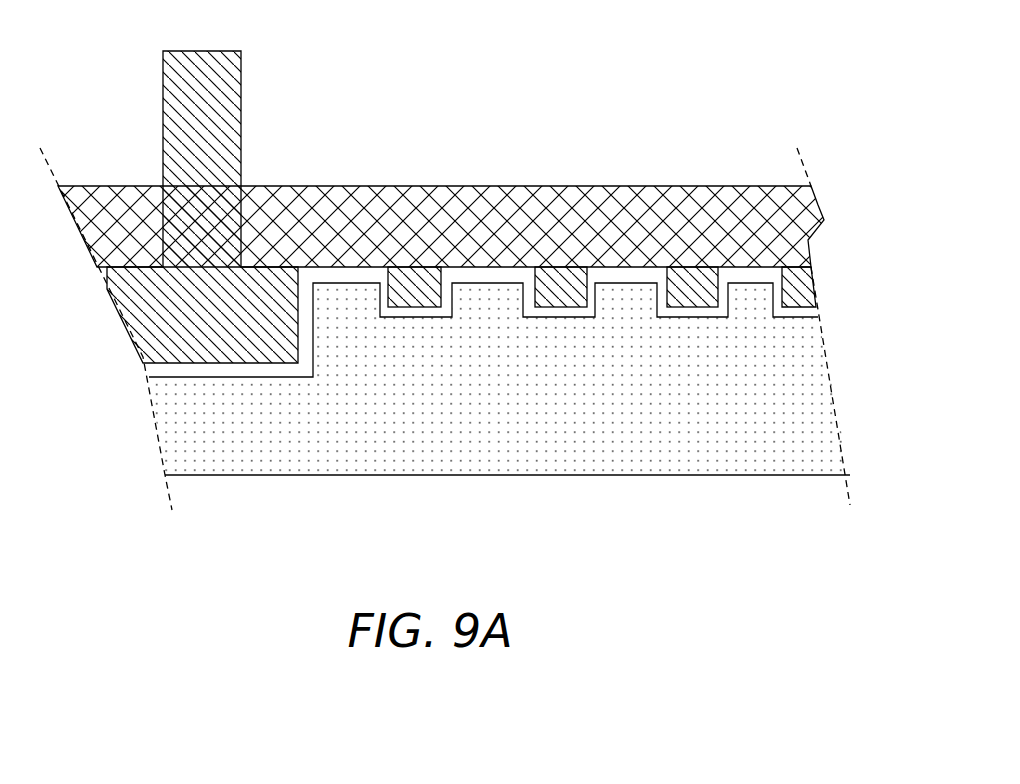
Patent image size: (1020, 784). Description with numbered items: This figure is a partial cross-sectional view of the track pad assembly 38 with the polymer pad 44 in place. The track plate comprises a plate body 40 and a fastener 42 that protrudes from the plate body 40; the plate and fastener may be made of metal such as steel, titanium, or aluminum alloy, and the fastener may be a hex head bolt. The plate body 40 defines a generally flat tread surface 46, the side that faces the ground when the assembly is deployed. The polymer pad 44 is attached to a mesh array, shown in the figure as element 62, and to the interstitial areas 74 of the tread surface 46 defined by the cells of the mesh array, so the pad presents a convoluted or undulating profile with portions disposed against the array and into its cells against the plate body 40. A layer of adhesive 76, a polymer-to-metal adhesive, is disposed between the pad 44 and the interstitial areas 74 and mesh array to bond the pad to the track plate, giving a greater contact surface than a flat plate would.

The track pad assembly 38 is at (727, 113).
The plate body 40 is at (683, 186).
The fastener 42 is at (197, 75).
The polymer pad 44 is at (539, 445).
The tread surface 46 is at (275, 272).
The conductive electrode 62 is at (415, 305).
The interstitial areas 74 is at (355, 283).
The layer of adhesive 76 is at (806, 310).